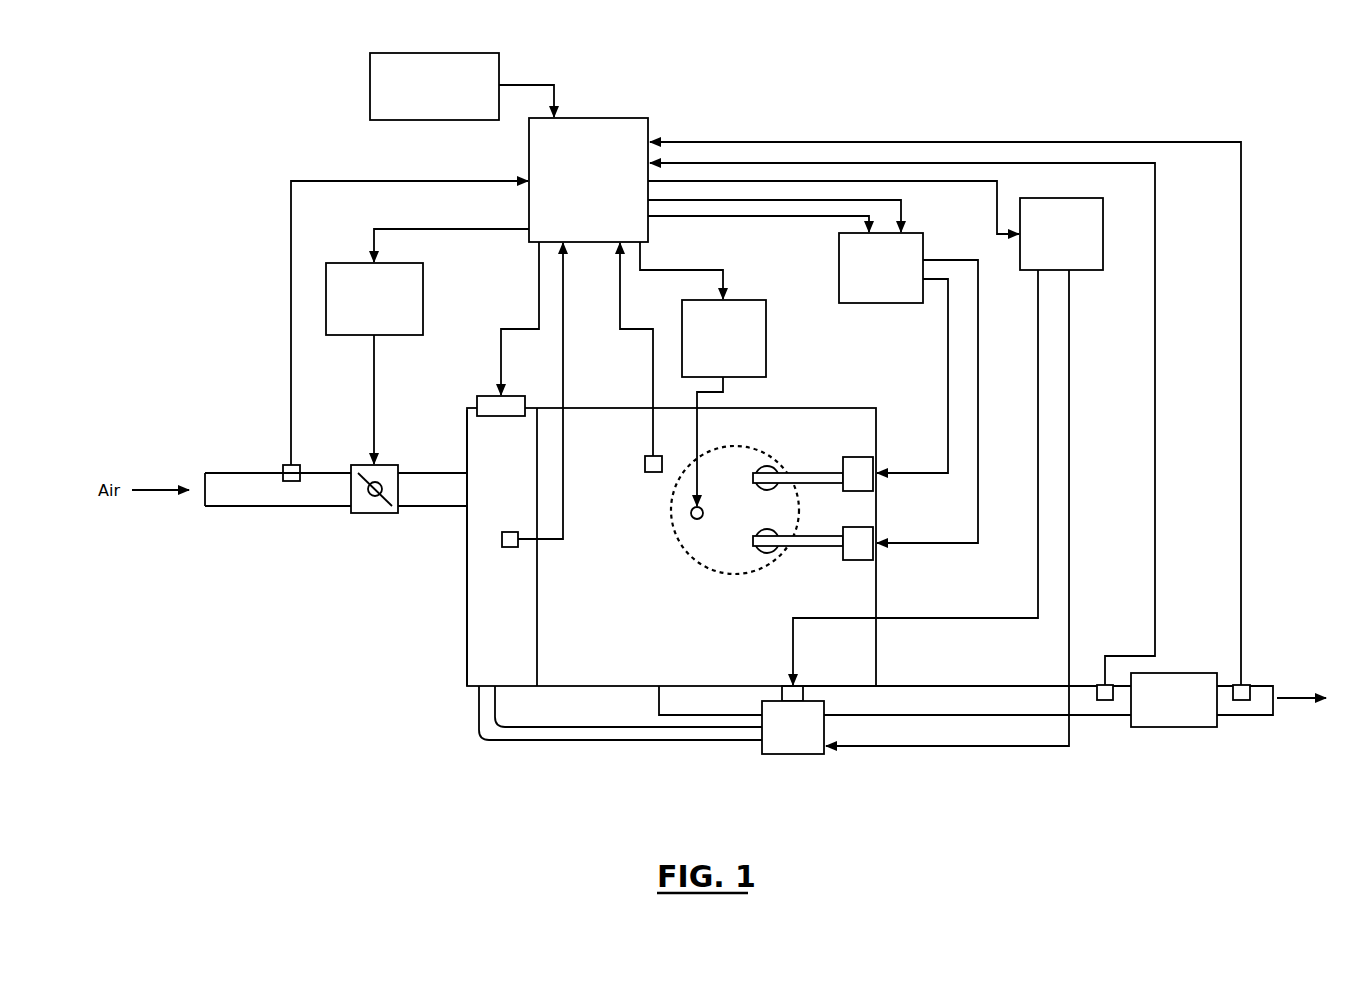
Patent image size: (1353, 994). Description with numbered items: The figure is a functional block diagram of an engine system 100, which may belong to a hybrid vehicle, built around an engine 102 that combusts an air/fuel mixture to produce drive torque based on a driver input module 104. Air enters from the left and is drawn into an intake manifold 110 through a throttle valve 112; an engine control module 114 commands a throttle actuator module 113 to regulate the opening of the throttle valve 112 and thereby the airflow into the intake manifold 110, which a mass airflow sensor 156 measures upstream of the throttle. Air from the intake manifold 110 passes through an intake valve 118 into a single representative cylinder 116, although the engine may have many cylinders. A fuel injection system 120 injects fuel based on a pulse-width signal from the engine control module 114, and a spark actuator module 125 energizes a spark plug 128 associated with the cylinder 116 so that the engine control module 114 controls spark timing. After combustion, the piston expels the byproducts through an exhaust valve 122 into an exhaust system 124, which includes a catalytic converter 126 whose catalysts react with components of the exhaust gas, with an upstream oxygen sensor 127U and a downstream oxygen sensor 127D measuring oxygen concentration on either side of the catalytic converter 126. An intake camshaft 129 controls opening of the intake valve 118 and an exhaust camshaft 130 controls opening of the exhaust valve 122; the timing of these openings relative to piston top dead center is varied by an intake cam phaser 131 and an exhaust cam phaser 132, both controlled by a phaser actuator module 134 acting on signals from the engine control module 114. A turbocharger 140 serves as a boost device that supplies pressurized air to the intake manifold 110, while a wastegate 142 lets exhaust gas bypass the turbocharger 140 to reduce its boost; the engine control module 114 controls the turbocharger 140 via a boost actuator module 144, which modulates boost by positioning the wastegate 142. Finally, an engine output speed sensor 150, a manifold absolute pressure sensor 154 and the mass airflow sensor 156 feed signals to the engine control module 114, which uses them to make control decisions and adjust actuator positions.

The engine system 100 is at (152, 70).
The engine 102 is at (838, 408).
The driver input module 104 is at (370, 85).
The intake manifold 110 is at (467, 620).
The throttle valve 112 is at (375, 513).
The throttle actuator module 113 is at (340, 263).
The engine control module 114 is at (648, 120).
The cylinder 116 is at (700, 565).
The intake valve 118 is at (772, 466).
The fuel injection system 120 is at (510, 416).
The exhaust valve 122 is at (767, 553).
The exhaust system 124 is at (957, 764).
The spark actuator module 125 is at (736, 300).
The catalytic converter 126 is at (1172, 727).
The upstream oxygen sensor 127U is at (1105, 700).
The downstream oxygen sensor 127D is at (1241, 700).
The spark plug 128 is at (691, 516).
The intake camshaft 129 is at (820, 473).
The exhaust camshaft 130 is at (825, 546).
The intake cam phaser 131 is at (862, 457).
The exhaust cam phaser 132 is at (865, 560).
The phaser actuator module 134 is at (923, 243).
The turbocharger 140 is at (795, 754).
The wastegate 142 is at (782, 688).
The boost actuator module 144 is at (1085, 270).
The engine output speed sensor 150 is at (653, 472).
The manifold absolute pressure sensor 154 is at (508, 547).
The mass airflow sensor 156 is at (291, 481).